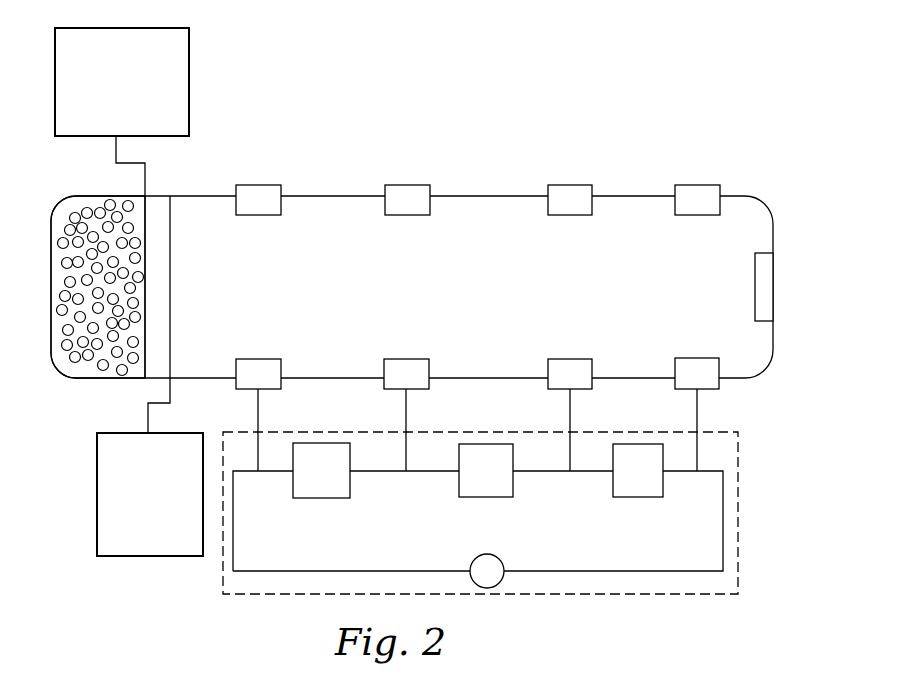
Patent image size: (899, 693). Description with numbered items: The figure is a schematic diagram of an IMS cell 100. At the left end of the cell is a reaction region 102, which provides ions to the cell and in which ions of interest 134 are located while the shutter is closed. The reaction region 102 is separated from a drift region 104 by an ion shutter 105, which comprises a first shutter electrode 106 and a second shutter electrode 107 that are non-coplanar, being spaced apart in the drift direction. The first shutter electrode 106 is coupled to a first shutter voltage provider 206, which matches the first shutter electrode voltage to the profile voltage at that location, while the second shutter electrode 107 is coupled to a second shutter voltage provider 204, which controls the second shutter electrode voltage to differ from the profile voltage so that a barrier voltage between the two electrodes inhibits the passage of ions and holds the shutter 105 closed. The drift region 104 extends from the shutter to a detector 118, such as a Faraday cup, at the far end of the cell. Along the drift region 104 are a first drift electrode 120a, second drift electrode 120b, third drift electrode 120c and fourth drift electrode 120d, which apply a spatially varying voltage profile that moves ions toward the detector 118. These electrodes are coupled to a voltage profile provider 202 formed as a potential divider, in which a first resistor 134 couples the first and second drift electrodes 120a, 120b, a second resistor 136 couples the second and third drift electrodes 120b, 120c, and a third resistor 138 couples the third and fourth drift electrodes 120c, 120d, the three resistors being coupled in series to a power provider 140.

The IMS cell 100 is at (636, 126).
The reaction region 102 is at (70, 318).
The drift region 104 is at (490, 223).
The ion shutter 105 is at (155, 368).
The first shutter electrode 106 is at (145, 218).
The second shutter electrode 107 is at (170, 368).
The detector 118 is at (768, 288).
The first drift electrode 120a is at (270, 195).
The second drift electrode 120b is at (410, 195).
The third drift electrode 120c is at (558, 193).
The fourth drift electrode 120d is at (700, 193).
The first resistor 134 is at (63, 262).
The second resistor 136 is at (486, 470).
The third resistor 138 is at (638, 470).
The power provider 140 is at (505, 578).
The voltage profile provider 202 is at (603, 597).
The second shutter voltage provider 204 is at (150, 494).
The first shutter voltage provider 206 is at (122, 82).